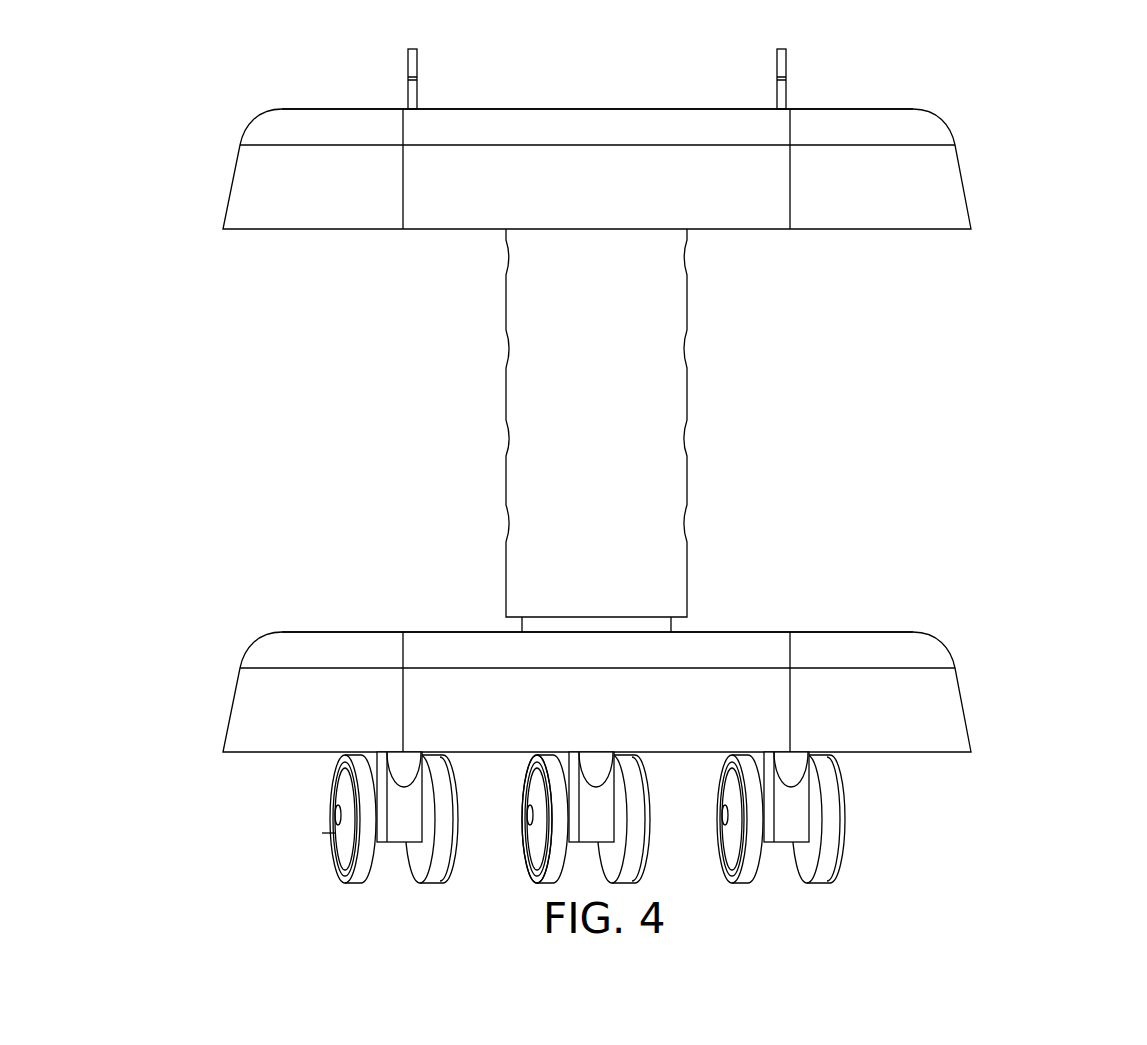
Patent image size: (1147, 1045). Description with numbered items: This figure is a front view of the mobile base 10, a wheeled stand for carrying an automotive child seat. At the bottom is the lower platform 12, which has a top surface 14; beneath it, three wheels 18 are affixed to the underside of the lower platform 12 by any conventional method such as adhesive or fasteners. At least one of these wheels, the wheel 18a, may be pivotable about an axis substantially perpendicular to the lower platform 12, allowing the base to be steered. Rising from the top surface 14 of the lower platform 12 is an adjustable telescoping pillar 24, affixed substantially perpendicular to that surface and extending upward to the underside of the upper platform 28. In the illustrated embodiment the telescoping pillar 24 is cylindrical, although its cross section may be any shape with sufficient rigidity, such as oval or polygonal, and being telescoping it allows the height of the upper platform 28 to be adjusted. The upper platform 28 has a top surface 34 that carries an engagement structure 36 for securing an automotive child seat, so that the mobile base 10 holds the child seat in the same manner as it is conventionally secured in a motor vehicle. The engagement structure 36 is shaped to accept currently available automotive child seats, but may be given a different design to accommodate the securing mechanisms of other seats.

The mobile base 10 is at (1022, 136).
The lower platform 12 is at (246, 645).
The top surface 14 is at (830, 632).
The wheels 18 is at (332, 855).
The pivotable wheel 18a is at (538, 885).
The adjustable telescoping pillar 24 is at (510, 392).
The upper platform 28 is at (246, 120).
The top surface 34 is at (618, 109).
The engagement structure 36 is at (410, 65).